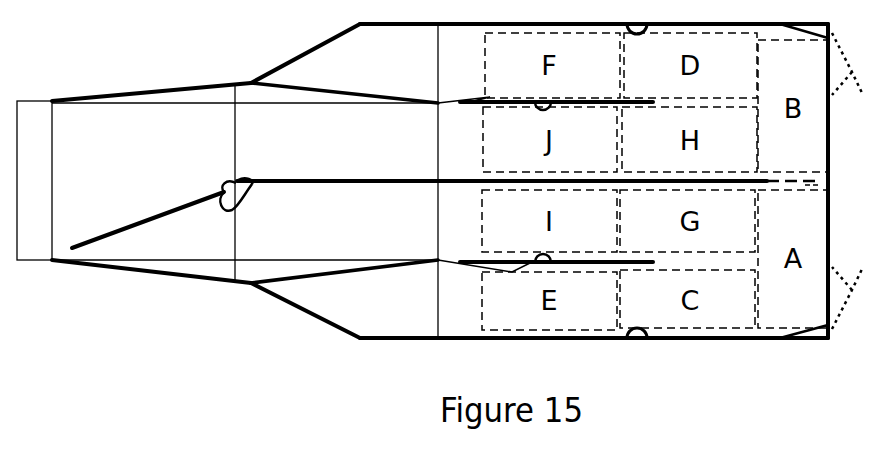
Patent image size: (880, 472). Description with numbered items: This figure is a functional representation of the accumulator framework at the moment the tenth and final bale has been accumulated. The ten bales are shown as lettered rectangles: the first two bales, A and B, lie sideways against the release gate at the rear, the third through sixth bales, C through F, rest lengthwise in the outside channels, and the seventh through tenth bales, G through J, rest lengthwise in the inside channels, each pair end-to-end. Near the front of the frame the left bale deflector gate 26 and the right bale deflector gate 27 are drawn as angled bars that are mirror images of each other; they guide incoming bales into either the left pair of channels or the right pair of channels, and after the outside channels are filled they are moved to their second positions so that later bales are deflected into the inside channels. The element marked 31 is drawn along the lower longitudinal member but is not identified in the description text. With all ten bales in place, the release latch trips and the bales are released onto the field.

The left bale deflector gate 26 is at (325, 276).
The right bale deflector gate 27 is at (335, 85).
The internal longitudinal member 31 is at (510, 272).